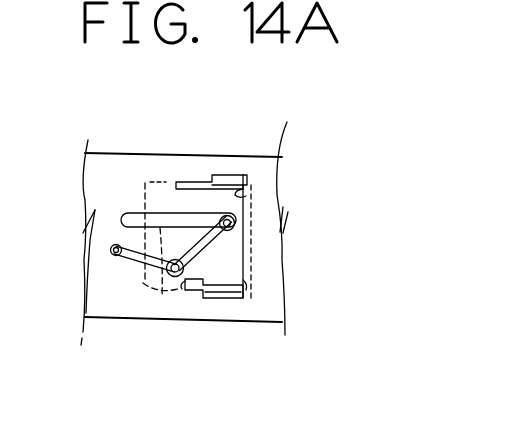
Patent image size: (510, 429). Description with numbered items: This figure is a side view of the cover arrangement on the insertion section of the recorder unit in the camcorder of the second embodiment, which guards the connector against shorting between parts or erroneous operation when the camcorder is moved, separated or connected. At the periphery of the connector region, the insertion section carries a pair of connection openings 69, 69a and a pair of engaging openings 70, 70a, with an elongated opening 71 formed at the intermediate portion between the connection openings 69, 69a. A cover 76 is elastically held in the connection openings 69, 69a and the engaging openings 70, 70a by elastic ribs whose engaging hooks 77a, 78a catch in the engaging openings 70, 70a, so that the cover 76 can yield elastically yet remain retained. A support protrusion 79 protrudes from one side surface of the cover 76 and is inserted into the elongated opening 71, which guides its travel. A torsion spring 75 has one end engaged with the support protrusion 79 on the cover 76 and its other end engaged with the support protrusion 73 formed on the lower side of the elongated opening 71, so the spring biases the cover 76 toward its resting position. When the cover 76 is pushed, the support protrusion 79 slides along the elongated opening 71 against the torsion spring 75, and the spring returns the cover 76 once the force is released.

The connection opening 69 is at (252, 185).
The connection opening 69a is at (240, 277).
The engaging opening 70 is at (190, 181).
The engaging opening 70a is at (190, 290).
The elongated opening 71 is at (159, 212).
The support protrusion 73 is at (117, 257).
The torsion spring 75 is at (168, 277).
The cover 76 is at (148, 183).
The engaging hook 77a is at (238, 176).
The engaging hook 78a is at (232, 298).
The support protrusion 79 is at (236, 220).